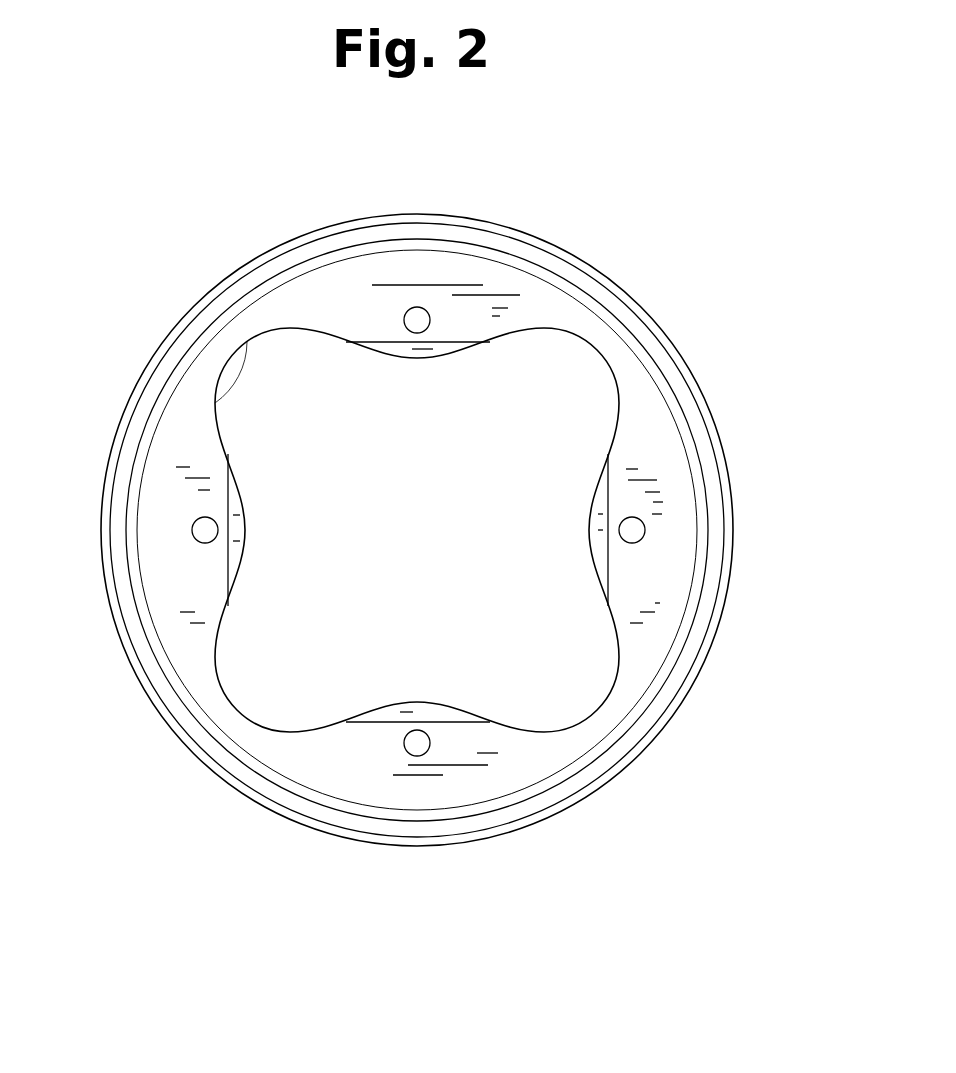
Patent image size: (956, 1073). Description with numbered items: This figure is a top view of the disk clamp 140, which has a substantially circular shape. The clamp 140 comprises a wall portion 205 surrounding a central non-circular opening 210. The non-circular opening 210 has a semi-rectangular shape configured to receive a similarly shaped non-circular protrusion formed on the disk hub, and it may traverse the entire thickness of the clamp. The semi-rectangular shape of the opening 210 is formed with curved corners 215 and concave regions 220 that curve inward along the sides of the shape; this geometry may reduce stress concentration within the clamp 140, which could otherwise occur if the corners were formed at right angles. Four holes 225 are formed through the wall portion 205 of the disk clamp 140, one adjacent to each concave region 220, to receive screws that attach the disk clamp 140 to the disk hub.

The disk clamp 140 is at (663, 825).
The wall portion 205 is at (438, 263).
The non-circular opening 210 is at (555, 372).
The curved corners 215 is at (247, 342).
The concave regions 220 is at (233, 527).
The holes 225 is at (420, 743).